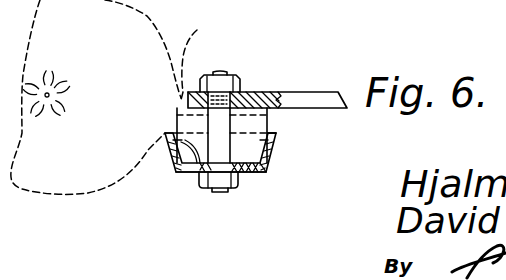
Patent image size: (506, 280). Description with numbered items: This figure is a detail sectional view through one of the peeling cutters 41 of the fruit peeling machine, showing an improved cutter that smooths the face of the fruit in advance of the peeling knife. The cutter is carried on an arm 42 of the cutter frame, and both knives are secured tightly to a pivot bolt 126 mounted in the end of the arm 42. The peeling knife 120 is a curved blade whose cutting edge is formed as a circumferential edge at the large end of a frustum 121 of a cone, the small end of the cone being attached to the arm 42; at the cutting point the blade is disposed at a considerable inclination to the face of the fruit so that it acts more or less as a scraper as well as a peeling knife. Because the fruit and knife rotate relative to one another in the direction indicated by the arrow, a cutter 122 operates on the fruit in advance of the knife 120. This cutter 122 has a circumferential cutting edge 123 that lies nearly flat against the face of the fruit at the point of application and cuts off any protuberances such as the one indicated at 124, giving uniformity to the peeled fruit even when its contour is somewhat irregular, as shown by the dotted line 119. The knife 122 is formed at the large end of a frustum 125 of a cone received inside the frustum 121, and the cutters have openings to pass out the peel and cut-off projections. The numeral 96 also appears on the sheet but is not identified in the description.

The dotted line 119 is at (140, 15).
The protuberance 124 is at (221, 68).
The arm 42 is at (326, 103).
The pivot bolt 126 is at (228, 123).
The cutter 122 is at (176, 120).
The peeling knife 120 is at (166, 134).
The circumferential cutting edge 123 is at (268, 115).
The frustum of a cone 125 is at (266, 153).
The peeling cutter 41 is at (257, 178).
The frustum of a cone 121 is at (243, 186).
The adjacent figure element 96 is at (500, 18).